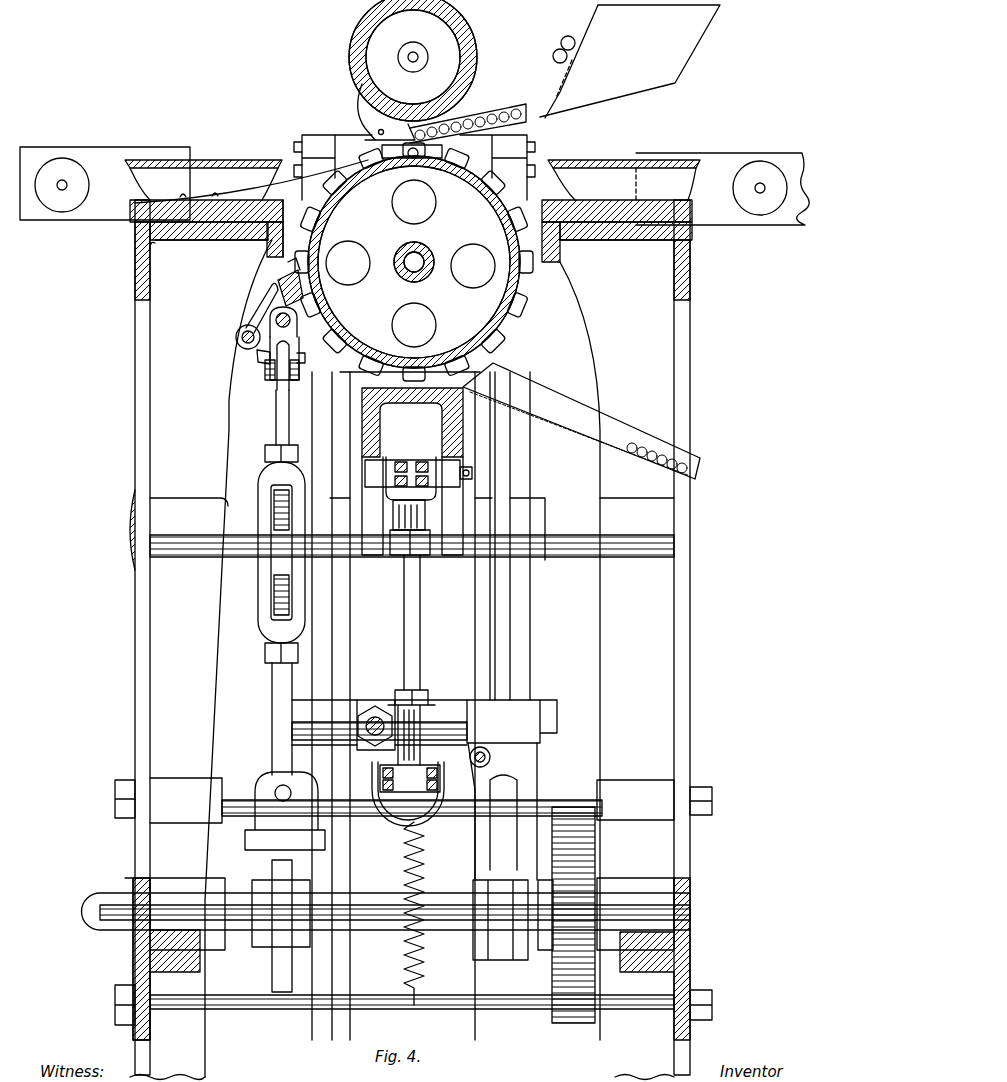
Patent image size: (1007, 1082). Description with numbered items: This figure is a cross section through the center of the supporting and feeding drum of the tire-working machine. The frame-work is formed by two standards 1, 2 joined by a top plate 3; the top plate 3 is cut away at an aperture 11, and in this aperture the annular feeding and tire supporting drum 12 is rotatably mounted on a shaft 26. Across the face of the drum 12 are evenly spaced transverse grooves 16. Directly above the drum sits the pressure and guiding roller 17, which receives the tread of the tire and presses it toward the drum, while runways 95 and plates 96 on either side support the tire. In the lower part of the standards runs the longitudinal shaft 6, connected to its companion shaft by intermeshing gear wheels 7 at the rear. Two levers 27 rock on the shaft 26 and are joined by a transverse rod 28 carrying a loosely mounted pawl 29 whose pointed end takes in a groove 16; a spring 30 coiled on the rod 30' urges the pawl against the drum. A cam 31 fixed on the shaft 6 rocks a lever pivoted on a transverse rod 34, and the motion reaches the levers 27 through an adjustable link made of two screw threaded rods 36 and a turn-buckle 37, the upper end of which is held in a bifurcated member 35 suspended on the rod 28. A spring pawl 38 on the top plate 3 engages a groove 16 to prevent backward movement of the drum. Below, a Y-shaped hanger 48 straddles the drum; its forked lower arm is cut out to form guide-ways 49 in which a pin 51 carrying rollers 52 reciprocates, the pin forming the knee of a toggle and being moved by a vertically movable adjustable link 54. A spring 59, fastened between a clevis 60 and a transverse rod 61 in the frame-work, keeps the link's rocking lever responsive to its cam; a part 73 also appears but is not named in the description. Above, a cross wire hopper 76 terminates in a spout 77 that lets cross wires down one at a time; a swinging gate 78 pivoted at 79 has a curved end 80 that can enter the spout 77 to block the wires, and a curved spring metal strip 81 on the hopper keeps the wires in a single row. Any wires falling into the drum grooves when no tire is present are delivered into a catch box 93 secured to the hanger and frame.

The standard 1 is at (150, 381).
The standard 2 is at (660, 386).
The top plate 3 is at (694, 222).
The longitudinal shaft 6 is at (352, 922).
The intermeshing gear wheels 7 is at (556, 1022).
The aperture in top plate 11 is at (535, 250).
The feeding and tire supporting drum 12 is at (495, 312).
The transverse grooves 16 is at (315, 208).
The pressure and guiding roller 17 is at (350, 40).
The shaft 26 is at (425, 253).
The levers 27 is at (252, 352).
The transverse rod 28 is at (276, 320).
The pawl 29 is at (290, 272).
The spring 30 is at (232, 301).
The rod 30' is at (216, 334).
The cam 31 is at (272, 966).
The transverse rod 34 is at (350, 818).
The bifurcated member 35 is at (264, 370).
The screw threaded rods 36 is at (278, 414).
The turn-buckle 37 is at (264, 596).
The spring pawl 38 is at (270, 192).
The Y-shaped hanger 48 is at (456, 410).
The guide-ways 49 is at (372, 560).
The pin 51 is at (470, 468).
The rollers 52 is at (372, 467).
The adjustable link 54 is at (420, 630).
The spring 59 is at (430, 975).
The clevis 60 is at (396, 830).
The transverse rod 61 is at (346, 1008).
The guide nut 73 is at (374, 700).
The cross wire hopper 76 is at (630, 61).
The spout 77 is at (528, 118).
The swinging gate 78 is at (362, 112).
The gate pivot 79 is at (378, 132).
The curved end 80 is at (356, 92).
The curved spring metal strip 81 is at (558, 86).
The catch box 93 is at (532, 395).
The runways 95 is at (100, 168).
The plates 96 is at (222, 158).